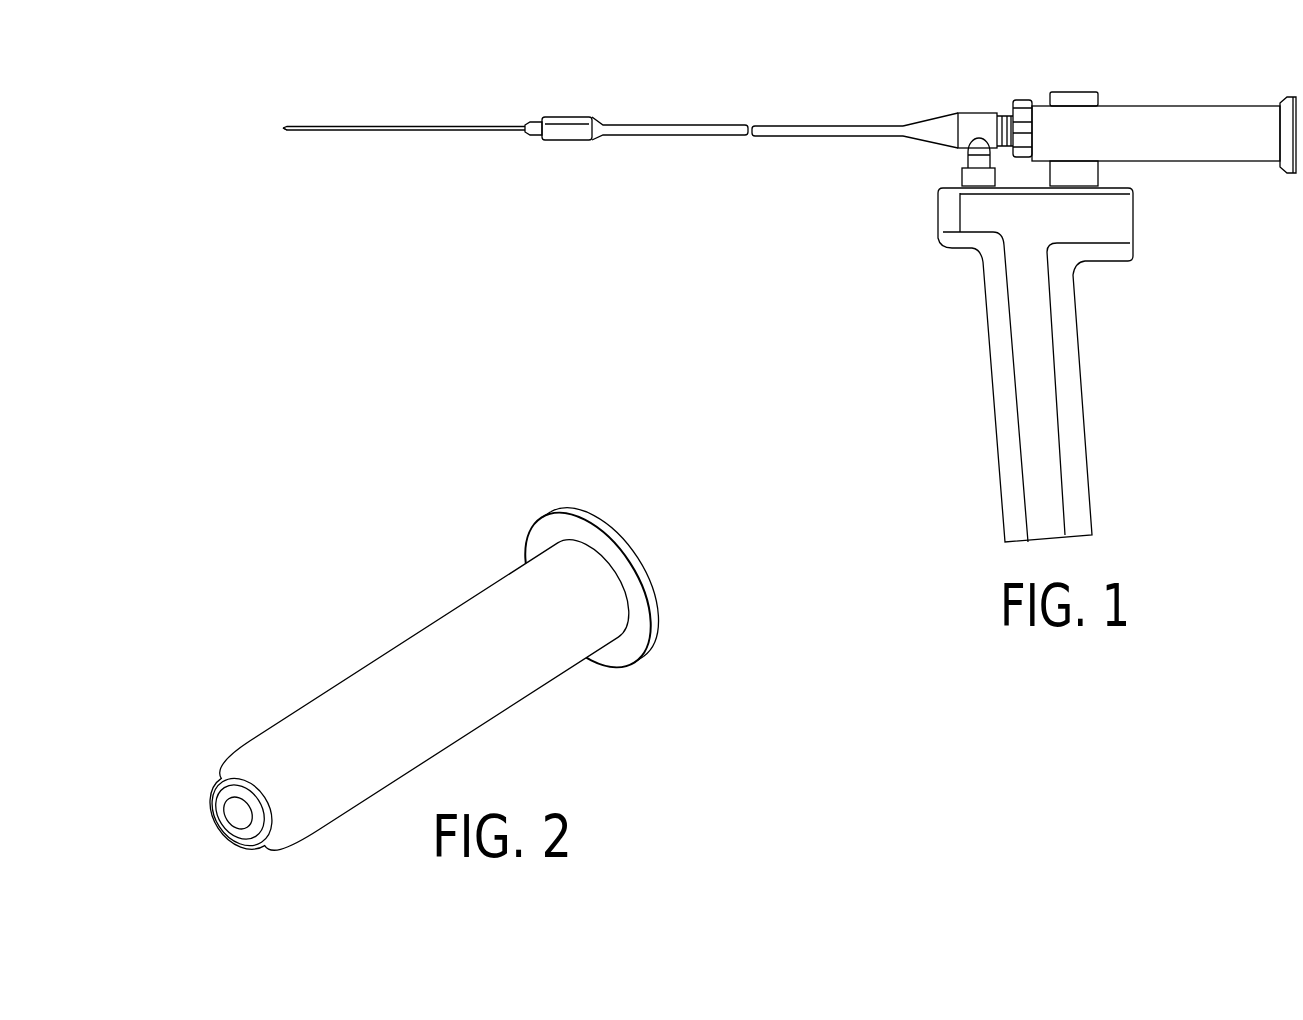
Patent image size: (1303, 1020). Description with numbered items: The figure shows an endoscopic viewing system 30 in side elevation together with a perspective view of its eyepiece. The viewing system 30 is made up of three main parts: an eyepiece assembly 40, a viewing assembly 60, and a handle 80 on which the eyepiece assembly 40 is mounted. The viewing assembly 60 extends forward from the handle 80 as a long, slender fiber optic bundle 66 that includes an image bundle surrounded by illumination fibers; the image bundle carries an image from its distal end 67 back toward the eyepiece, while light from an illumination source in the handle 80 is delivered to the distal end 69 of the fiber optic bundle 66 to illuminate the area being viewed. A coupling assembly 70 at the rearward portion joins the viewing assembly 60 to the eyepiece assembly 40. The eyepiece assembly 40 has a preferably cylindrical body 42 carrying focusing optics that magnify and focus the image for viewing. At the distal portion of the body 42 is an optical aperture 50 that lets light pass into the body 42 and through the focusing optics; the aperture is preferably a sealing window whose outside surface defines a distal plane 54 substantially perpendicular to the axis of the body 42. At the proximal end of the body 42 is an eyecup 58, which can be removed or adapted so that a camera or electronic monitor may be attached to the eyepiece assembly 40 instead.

In FIG. 1, the endoscopic viewing system 30 is at (1208, 289).
In FIG. 1, the eyepiece assembly 40 is at (1168, 107).
In FIG. 2, the eyepiece assembly 40 is at (449, 709).
In FIG. 2, the body 42 is at (498, 712).
In FIG. 2, the optical aperture 50 is at (232, 833).
In FIG. 2, the distal plane 54 is at (242, 817).
In FIG. 2, the eyecup 58 is at (650, 600).
In FIG. 1, the viewing assembly 60 is at (619, 128).
In FIG. 1, the fiber optic bundle 66 is at (633, 130).
In FIG. 1, the distal end 67 is at (284, 127).
In FIG. 1, the distal end 69 is at (284, 130).
In FIG. 1, the coupling assembly 70 is at (1025, 101).
In FIG. 1, the handle 80 is at (1143, 232).